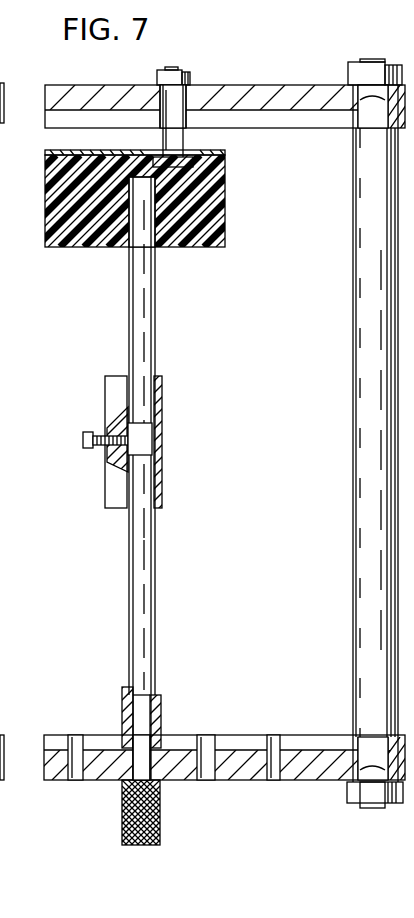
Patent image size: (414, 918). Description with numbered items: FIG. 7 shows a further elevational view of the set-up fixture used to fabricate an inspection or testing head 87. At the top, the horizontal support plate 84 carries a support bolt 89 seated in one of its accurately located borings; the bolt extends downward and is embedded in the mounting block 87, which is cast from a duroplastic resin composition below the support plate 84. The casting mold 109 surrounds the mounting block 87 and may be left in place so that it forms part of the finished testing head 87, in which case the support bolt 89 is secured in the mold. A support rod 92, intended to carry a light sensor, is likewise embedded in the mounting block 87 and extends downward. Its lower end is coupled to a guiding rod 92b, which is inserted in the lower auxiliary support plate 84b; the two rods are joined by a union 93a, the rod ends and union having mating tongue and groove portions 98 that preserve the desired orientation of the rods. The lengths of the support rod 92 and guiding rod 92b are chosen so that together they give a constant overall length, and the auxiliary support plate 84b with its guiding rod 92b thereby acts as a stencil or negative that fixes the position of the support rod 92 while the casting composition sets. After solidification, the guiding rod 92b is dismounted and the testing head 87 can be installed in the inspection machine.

The support plate 84 is at (275, 84).
The auxiliary support plate 84b is at (241, 736).
The support bolt 89 is at (177, 68).
The casting mold 109 is at (52, 151).
The mounting block 87 is at (78, 252).
The support rod 92 is at (154, 308).
The guiding rod 92b is at (157, 592).
The tongue-and-groove coupling 98 is at (149, 418).
The union 93a is at (100, 442).